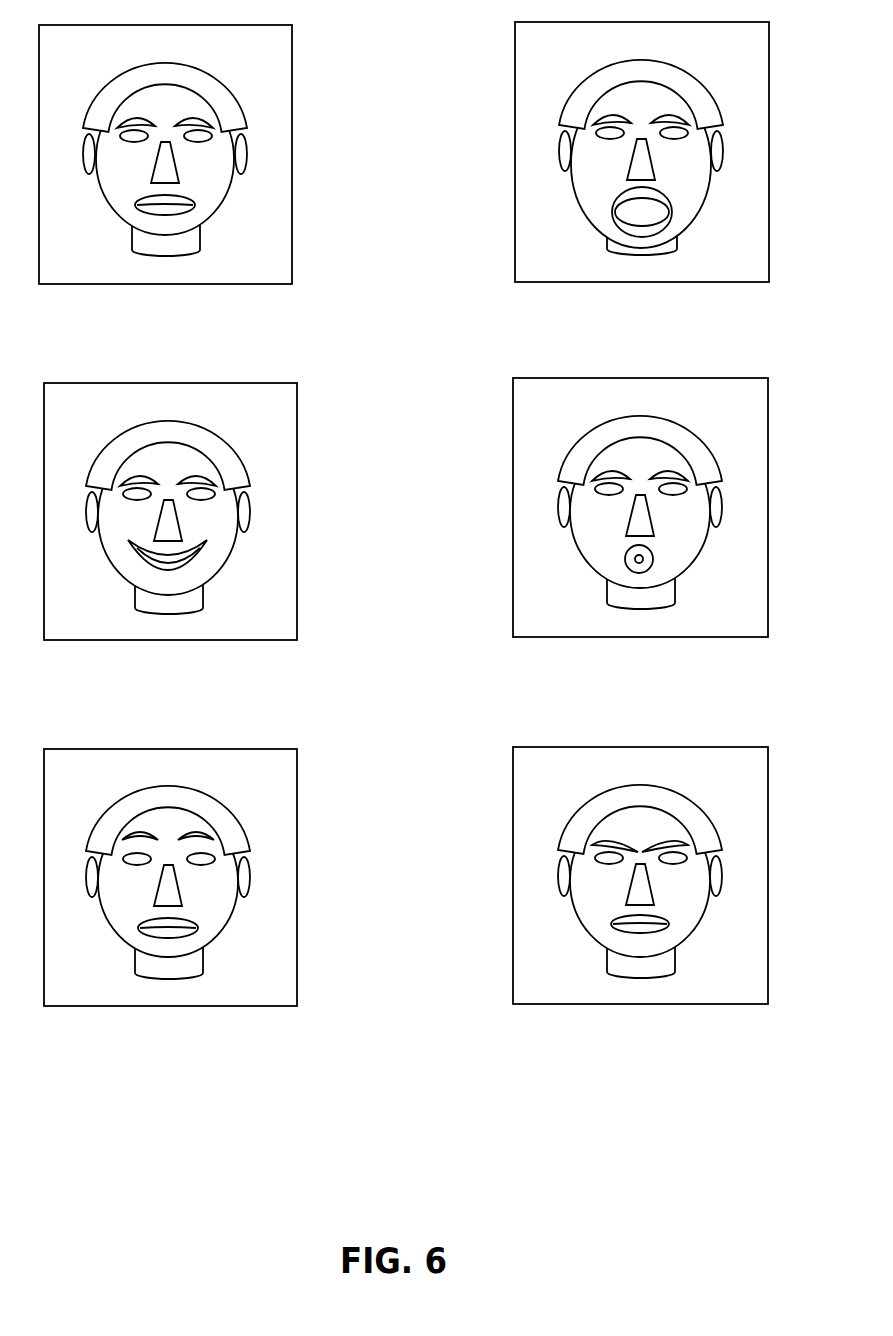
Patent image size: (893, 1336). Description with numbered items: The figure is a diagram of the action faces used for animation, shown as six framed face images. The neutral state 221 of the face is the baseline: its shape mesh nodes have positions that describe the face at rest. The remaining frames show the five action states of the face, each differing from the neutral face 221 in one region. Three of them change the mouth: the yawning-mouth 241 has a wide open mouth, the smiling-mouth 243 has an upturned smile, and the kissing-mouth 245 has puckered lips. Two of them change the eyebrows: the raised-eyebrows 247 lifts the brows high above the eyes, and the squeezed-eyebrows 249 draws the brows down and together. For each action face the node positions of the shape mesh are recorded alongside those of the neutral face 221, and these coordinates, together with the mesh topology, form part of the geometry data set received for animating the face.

The neutral state 221 is at (292, 222).
The yawning-mouth 241 is at (769, 212).
The smiling-mouth 243 is at (297, 575).
The kissing-mouth 245 is at (768, 568).
The raised-eyebrows 247 is at (297, 938).
The squeezed-eyebrows 249 is at (768, 935).